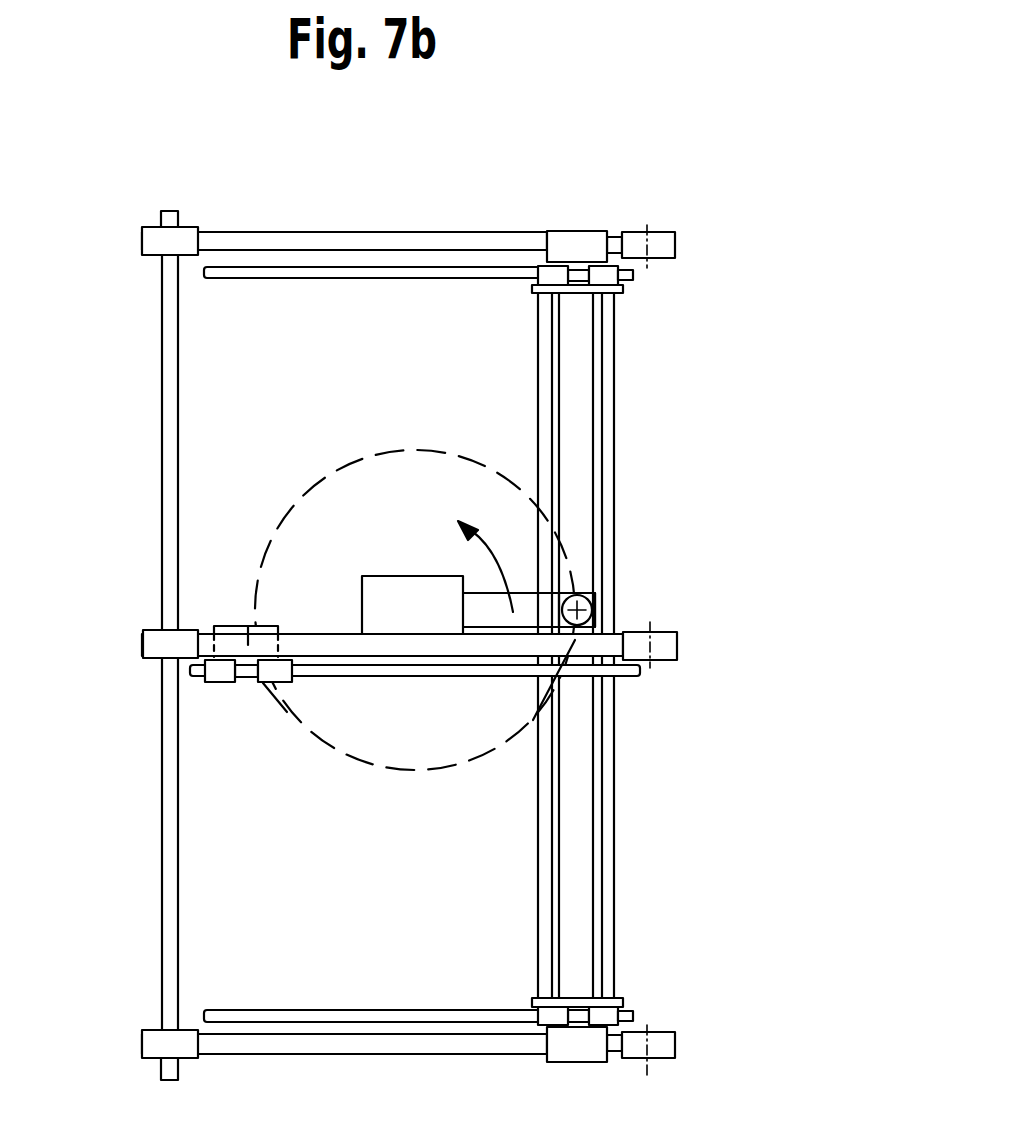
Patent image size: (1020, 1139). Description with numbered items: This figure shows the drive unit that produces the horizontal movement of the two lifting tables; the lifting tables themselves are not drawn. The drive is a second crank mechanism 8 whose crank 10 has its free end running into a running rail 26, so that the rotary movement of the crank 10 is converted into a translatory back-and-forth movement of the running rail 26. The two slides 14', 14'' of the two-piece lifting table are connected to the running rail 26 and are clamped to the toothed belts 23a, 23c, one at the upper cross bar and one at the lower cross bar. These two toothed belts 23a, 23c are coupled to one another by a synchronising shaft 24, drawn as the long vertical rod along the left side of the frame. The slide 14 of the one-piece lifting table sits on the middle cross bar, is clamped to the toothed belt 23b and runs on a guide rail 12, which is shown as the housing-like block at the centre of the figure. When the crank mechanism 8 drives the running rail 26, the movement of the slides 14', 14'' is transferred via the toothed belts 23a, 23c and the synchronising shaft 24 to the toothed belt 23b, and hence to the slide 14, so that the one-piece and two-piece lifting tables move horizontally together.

The second crank mechanism 8 is at (473, 681).
The crank 10 is at (483, 605).
The guide rail 12 is at (390, 677).
The slide 14 is at (183, 693).
The slide 14' is at (539, 1068).
The slide 14'' is at (564, 198).
The toothed belt 23a is at (676, 245).
The toothed belt 23b is at (677, 645).
The toothed belt 23c is at (676, 1045).
The synchronising shaft 24 is at (165, 440).
The running rail 26 is at (614, 441).